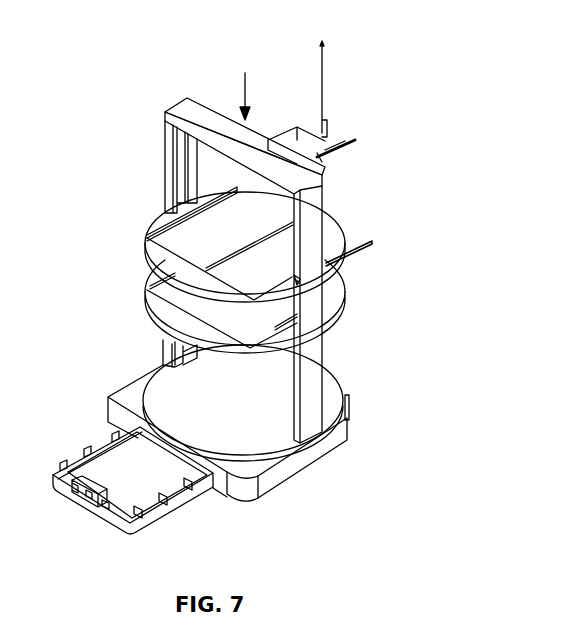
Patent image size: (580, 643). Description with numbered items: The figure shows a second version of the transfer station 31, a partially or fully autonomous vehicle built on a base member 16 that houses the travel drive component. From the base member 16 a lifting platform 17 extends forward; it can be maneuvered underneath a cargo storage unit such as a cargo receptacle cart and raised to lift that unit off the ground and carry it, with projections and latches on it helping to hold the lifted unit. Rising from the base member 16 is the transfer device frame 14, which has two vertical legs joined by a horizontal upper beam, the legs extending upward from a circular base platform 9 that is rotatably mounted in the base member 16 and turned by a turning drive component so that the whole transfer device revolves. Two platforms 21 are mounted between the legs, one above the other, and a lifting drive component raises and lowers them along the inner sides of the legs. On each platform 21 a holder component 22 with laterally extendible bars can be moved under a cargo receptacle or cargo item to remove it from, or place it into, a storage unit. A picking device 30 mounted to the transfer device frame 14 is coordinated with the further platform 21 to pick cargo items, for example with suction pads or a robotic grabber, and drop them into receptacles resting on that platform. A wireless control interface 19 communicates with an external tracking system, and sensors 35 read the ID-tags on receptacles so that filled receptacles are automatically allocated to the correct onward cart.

The base platform 9 is at (177, 163).
The transfer device frame 14 is at (312, 214).
The base member 16 is at (300, 477).
The lifting platform 17 is at (120, 465).
The wireless control interface 19 is at (323, 92).
The platform 21 is at (147, 240).
The holder component 22 is at (237, 243).
The picking device 30 is at (363, 143).
The transfer station 31 is at (245, 73).
The sensors 35 is at (296, 280).